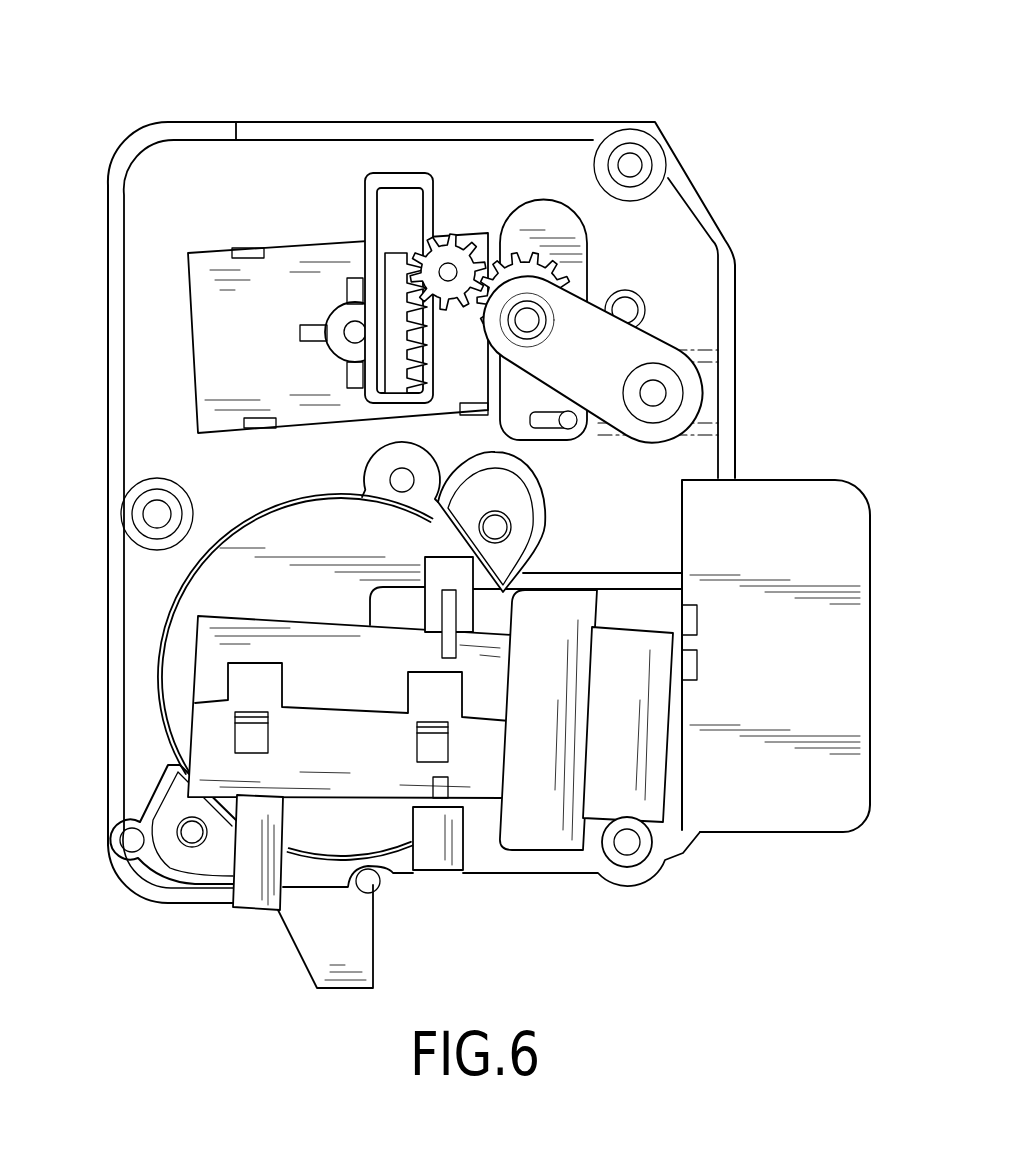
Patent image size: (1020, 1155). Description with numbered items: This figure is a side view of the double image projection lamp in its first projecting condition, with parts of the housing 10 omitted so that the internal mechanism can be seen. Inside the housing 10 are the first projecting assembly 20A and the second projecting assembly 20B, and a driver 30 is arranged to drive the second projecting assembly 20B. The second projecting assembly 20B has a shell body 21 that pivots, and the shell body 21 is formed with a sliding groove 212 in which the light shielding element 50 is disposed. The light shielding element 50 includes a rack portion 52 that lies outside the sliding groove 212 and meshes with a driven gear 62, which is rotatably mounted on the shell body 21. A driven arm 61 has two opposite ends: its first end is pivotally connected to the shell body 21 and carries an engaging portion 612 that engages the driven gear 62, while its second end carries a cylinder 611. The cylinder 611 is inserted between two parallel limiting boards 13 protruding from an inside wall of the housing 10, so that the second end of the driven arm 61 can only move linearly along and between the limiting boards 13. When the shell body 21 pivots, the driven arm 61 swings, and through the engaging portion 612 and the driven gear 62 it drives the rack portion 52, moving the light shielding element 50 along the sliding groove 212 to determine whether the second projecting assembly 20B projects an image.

The housing 10 is at (162, 903).
The limiting boards 13 is at (700, 350).
The first projecting assembly 20A is at (520, 845).
The second projecting assembly 20B is at (215, 195).
The shell body 21 is at (178, 248).
The sliding groove 212 is at (375, 213).
The driver 30 is at (167, 612).
The light shielding element 50 is at (395, 243).
The rack portion 52 is at (416, 245).
The driven arm 61 is at (598, 290).
The cylinder 611 is at (653, 393).
The engaging portion 612 is at (527, 257).
The driven gear 62 is at (457, 230).